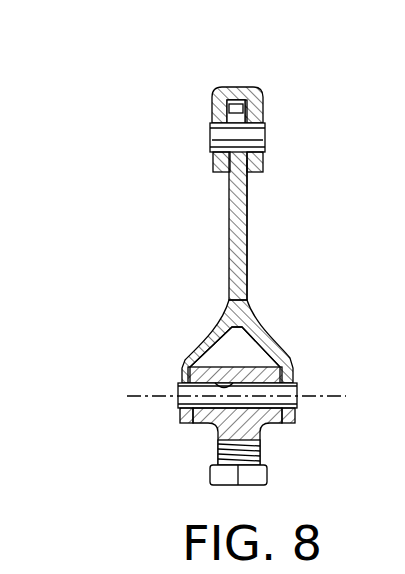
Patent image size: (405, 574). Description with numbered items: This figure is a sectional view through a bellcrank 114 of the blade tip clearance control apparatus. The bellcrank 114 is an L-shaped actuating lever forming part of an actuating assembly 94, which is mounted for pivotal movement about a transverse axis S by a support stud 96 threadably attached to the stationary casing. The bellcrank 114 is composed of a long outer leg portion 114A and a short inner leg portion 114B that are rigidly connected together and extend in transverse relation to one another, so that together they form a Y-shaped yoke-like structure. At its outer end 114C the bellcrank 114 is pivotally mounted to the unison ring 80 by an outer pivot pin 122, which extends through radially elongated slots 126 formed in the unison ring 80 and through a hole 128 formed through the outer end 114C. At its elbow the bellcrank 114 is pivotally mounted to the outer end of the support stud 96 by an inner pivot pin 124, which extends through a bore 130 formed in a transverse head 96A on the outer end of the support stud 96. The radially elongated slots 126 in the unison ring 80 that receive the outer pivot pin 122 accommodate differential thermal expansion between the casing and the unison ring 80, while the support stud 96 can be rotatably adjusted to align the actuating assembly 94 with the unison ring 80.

The unison ring 80 is at (256, 94).
The actuating assembly 94 is at (255, 230).
The support stud 96 is at (260, 437).
The transverse head 96A is at (243, 367).
The bellcrank 114 is at (243, 214).
The outer leg portion 114A is at (247, 259).
The inner leg portion 114B is at (270, 340).
The outer end 114C is at (238, 97).
The outer pivot pin 122 is at (258, 141).
The inner pivot pin 124 is at (298, 401).
The radially elongated slots 126 is at (213, 150).
The hole 128 is at (238, 141).
The bore 130 is at (212, 384).
The transverse axis S is at (320, 393).